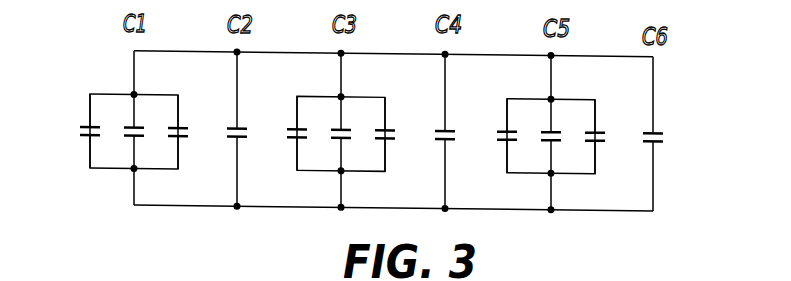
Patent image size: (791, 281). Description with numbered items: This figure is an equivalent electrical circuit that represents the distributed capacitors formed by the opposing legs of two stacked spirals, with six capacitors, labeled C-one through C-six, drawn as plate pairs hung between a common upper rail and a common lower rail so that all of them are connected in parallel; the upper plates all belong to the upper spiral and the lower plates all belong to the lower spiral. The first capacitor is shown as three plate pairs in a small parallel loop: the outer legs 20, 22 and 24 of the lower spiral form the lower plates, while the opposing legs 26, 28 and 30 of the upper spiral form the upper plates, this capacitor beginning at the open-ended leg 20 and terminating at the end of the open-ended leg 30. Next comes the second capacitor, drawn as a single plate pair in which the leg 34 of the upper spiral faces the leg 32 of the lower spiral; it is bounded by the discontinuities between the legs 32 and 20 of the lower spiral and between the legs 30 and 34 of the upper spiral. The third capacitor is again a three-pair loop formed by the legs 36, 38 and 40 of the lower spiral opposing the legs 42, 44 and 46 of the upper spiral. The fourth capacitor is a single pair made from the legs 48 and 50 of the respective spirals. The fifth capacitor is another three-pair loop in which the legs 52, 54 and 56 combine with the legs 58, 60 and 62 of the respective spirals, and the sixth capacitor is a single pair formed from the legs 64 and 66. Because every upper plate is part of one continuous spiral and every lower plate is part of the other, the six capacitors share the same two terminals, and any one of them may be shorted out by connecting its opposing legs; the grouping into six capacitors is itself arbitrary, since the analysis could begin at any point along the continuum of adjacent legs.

The outer leg 20 is at (82, 139).
The outer leg 22 is at (137, 137).
The outer leg 24 is at (187, 139).
The opposing leg 26 is at (80, 122).
The opposing leg 28 is at (138, 127).
The open-ended leg 30 is at (186, 125).
The leg 32 is at (244, 139).
The leg 34 is at (245, 127).
The leg 36 is at (293, 142).
The leg 38 is at (348, 140).
The leg 40 is at (390, 141).
The leg 42 is at (295, 126).
The leg 44 is at (346, 129).
The leg 46 is at (390, 129).
The leg 48 is at (450, 141).
The leg 50 is at (451, 130).
The leg 52 is at (498, 143).
The leg 54 is at (558, 142).
The leg 56 is at (601, 143).
The leg 58 is at (499, 129).
The leg 60 is at (557, 131).
The leg 62 is at (600, 131).
The leg 64 is at (661, 144).
The leg 66 is at (660, 134).